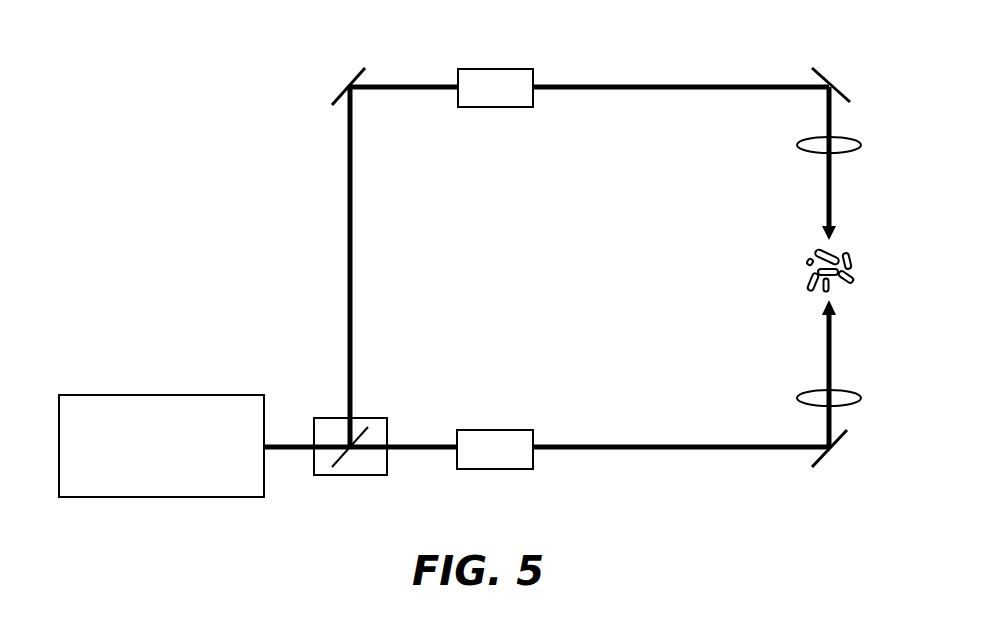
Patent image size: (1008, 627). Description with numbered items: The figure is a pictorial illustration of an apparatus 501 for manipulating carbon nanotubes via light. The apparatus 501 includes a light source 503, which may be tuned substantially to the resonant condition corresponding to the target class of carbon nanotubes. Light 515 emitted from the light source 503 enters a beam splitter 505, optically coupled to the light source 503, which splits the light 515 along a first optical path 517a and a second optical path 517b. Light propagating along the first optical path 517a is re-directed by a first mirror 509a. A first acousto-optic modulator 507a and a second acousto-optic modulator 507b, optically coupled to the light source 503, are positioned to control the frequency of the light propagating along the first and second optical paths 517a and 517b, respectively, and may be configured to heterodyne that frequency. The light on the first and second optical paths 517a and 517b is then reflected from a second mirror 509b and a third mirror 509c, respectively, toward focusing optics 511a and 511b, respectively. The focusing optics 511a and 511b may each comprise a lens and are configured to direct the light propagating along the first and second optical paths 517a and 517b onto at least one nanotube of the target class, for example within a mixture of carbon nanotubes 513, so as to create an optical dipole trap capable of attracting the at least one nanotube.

The apparatus 501 is at (217, 242).
The light source 503 is at (157, 395).
The beam splitter 505 is at (353, 475).
The first acousto-optic modulator 507a is at (487, 107).
The second acousto-optic modulator 507b is at (493, 430).
The first mirror 509a is at (338, 93).
The second mirror 509b is at (822, 75).
The third mirror 509c is at (820, 458).
The focusing optics 511a is at (793, 143).
The focusing optics 511b is at (793, 397).
The mixture of carbon nanotubes 513 is at (780, 269).
The light 515 is at (285, 440).
The first optical path 517a is at (353, 263).
The second optical path 517b is at (607, 447).